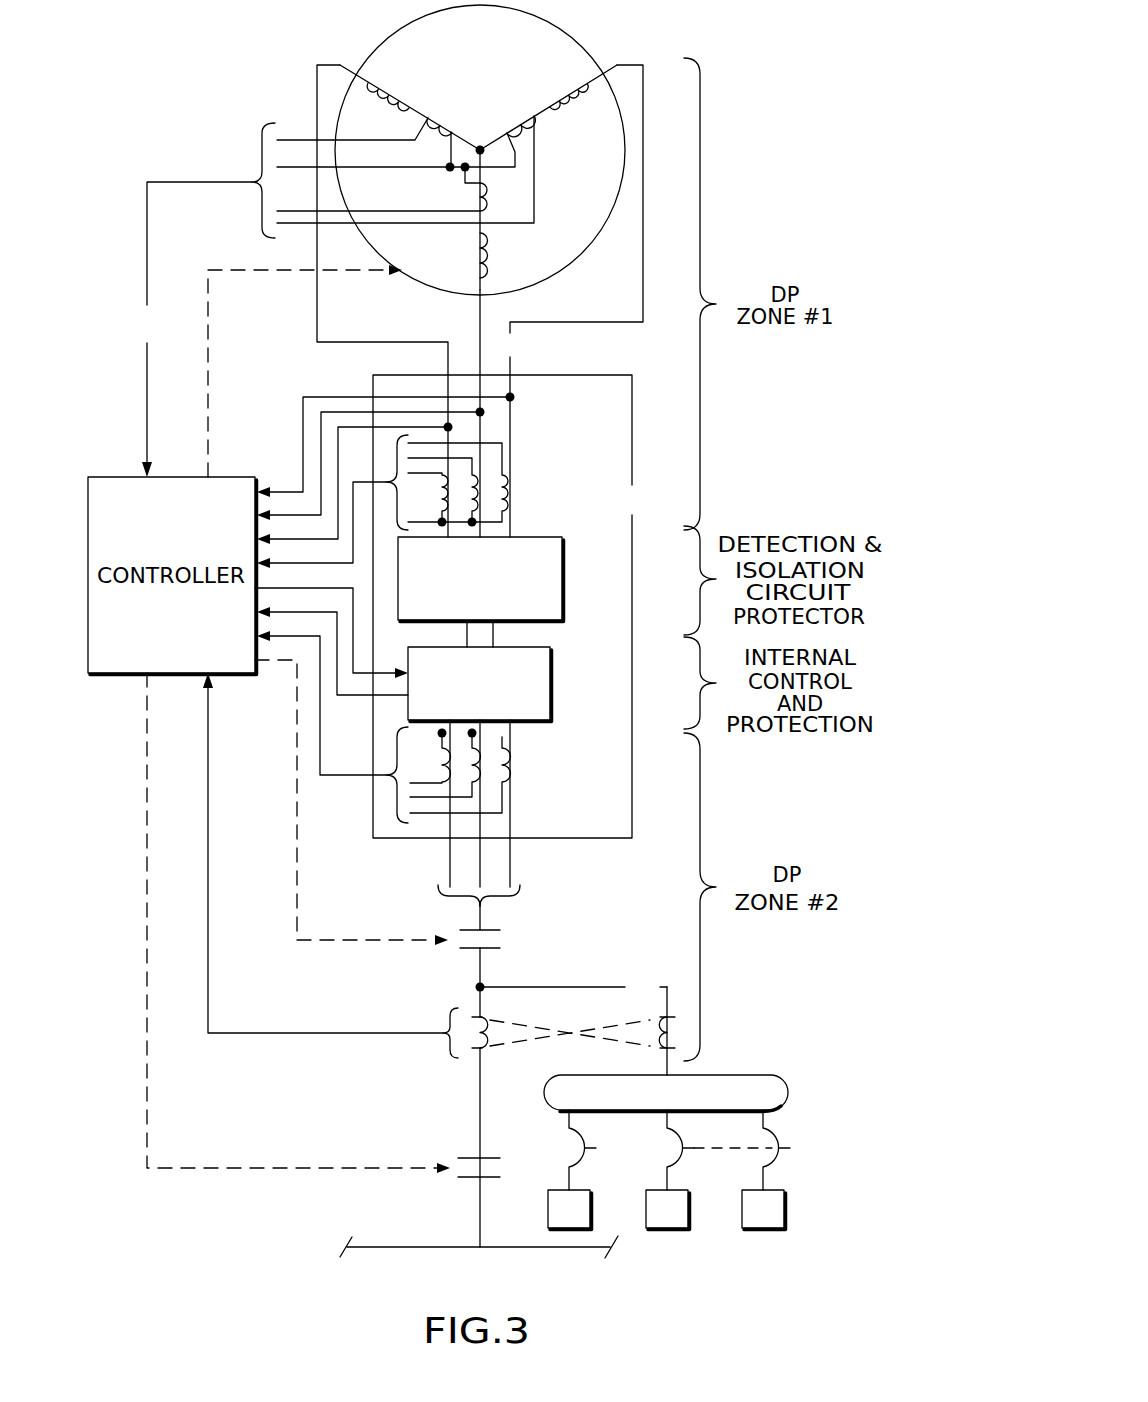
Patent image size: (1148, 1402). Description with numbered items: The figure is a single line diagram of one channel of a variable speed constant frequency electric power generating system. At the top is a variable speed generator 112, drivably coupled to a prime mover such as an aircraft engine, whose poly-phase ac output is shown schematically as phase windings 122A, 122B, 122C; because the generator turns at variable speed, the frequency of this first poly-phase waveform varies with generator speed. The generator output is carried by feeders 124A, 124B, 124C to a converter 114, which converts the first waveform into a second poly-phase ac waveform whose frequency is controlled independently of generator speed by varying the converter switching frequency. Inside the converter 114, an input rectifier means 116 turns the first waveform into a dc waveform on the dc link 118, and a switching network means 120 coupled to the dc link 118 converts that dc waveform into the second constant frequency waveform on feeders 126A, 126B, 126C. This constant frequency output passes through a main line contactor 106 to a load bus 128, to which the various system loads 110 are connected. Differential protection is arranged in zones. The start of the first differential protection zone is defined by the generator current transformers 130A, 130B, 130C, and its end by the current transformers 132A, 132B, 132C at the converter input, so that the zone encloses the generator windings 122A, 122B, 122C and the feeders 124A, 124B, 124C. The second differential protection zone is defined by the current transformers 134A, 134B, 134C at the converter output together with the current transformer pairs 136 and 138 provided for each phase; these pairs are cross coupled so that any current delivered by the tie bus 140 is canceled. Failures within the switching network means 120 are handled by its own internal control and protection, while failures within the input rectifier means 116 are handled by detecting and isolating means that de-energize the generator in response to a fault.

The main line contactor 106 is at (493, 952).
The system loads 110 is at (786, 1215).
The variable speed generator 112 is at (573, 34).
The converter 114 is at (633, 825).
The input rectifier means 116 is at (563, 556).
The dc link 118 is at (494, 636).
The switching network means 120 is at (553, 695).
The phase winding 122A is at (583, 96).
The phase winding 122B is at (492, 277).
The phase winding 122C is at (394, 92).
The feeder 124A is at (643, 284).
The feeder 124B is at (480, 322).
The feeder 124C is at (316, 302).
The feeder 126A is at (510, 875).
The feeder 126B is at (460, 878).
The feeder 126C is at (450, 858).
The load bus 128 is at (790, 1092).
The generator current transformer 130A is at (510, 121).
The generator current transformer 130B is at (487, 211).
The generator current transformer 130C is at (434, 117).
The current transformer 132A is at (513, 493).
The current transformer 132B is at (490, 483).
The current transformer 132C is at (455, 476).
The current transformer 134A is at (518, 761).
The current transformer 134B is at (504, 781).
The current transformer 134C is at (453, 783).
The current transformer 136 is at (490, 1043).
The current transformer 138 is at (669, 1018).
The tie bus 140 is at (452, 1247).